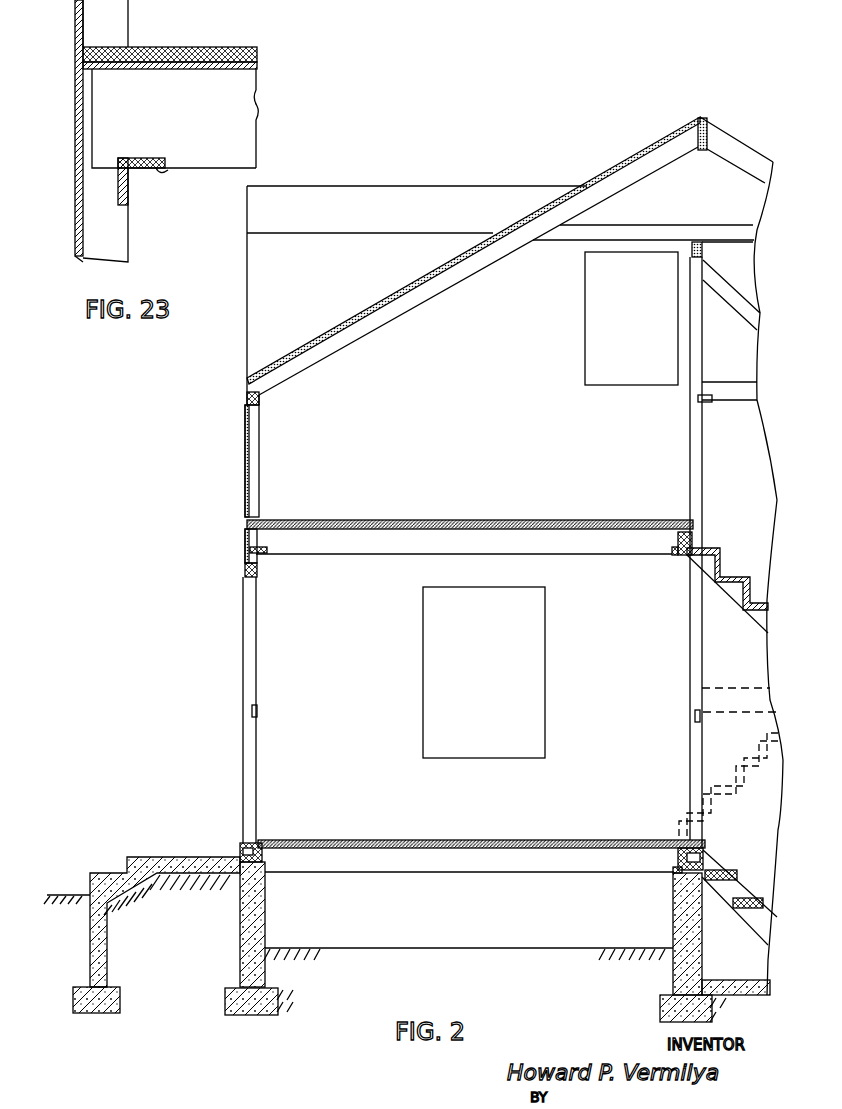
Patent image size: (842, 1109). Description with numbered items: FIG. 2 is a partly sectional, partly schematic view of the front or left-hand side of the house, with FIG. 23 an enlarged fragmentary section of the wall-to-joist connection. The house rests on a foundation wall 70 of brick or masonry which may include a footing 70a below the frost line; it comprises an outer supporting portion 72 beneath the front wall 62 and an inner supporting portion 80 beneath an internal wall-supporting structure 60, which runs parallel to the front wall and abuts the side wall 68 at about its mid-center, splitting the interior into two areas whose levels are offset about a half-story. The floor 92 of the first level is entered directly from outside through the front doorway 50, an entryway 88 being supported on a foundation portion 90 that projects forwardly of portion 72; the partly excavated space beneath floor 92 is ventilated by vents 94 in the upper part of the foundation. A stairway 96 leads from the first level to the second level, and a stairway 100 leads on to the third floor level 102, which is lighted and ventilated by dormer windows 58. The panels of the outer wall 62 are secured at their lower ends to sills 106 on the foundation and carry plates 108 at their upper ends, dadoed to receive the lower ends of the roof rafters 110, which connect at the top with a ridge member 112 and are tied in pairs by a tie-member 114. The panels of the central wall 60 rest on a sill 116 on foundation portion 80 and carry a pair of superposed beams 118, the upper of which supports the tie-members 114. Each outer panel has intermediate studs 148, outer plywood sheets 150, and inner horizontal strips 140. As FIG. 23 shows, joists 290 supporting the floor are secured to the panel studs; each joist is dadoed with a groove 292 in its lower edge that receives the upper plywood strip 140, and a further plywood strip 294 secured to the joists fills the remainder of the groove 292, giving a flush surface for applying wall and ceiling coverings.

In FIG. 2, the front doorway 50 is at (238, 706).
In FIG. 2, the dormer windows 58 is at (317, 178).
In FIG. 2, the internal wall-supporting structure 60 is at (708, 448).
In FIG. 2, the front wall 62 is at (260, 460).
In FIG. 2, the side wall 68 is at (480, 441).
In FIG. 2, the foundation wall 70 is at (268, 930).
In FIG. 2, the footing 70a is at (236, 1010).
In FIG. 2, the outer supporting portion 72 is at (268, 912).
In FIG. 2, the inner supporting portion 80 is at (673, 910).
In FIG. 2, the entryway 88 is at (155, 850).
In FIG. 2, the foundation portion 90 is at (100, 943).
In FIG. 2, the floor of the first level 92 is at (450, 840).
In FIG. 2, the vents 94 is at (270, 885).
In FIG. 2, the stairway 96 is at (736, 760).
In FIG. 2, the stairway 100 is at (725, 562).
In FIG. 23, the third floor level 102 is at (215, 52).
In FIG. 2, the third floor level 102 is at (512, 520).
In FIG. 2, the sills 106 is at (268, 862).
In FIG. 2, the plates 108 is at (262, 396).
In FIG. 2, the roof rafters 110 is at (430, 289).
In FIG. 2, the ridge member 112 is at (712, 130).
In FIG. 2, the tie-member 114 is at (633, 228).
In FIG. 2, the sill 116 is at (672, 869).
In FIG. 2, the superposed beams 118 is at (712, 250).
In FIG. 23, the horizontal strips 140 is at (129, 190).
In FIG. 23, the intermediate studs 148 is at (112, 238).
In FIG. 23, the sheets of plywood 150 is at (75, 228).
In FIG. 23, the joists 290 is at (248, 107).
In FIG. 2, the joists 290 is at (332, 546).
In FIG. 23, the groove 292 is at (145, 157).
In FIG. 23, the plywood strip 294 is at (166, 168).